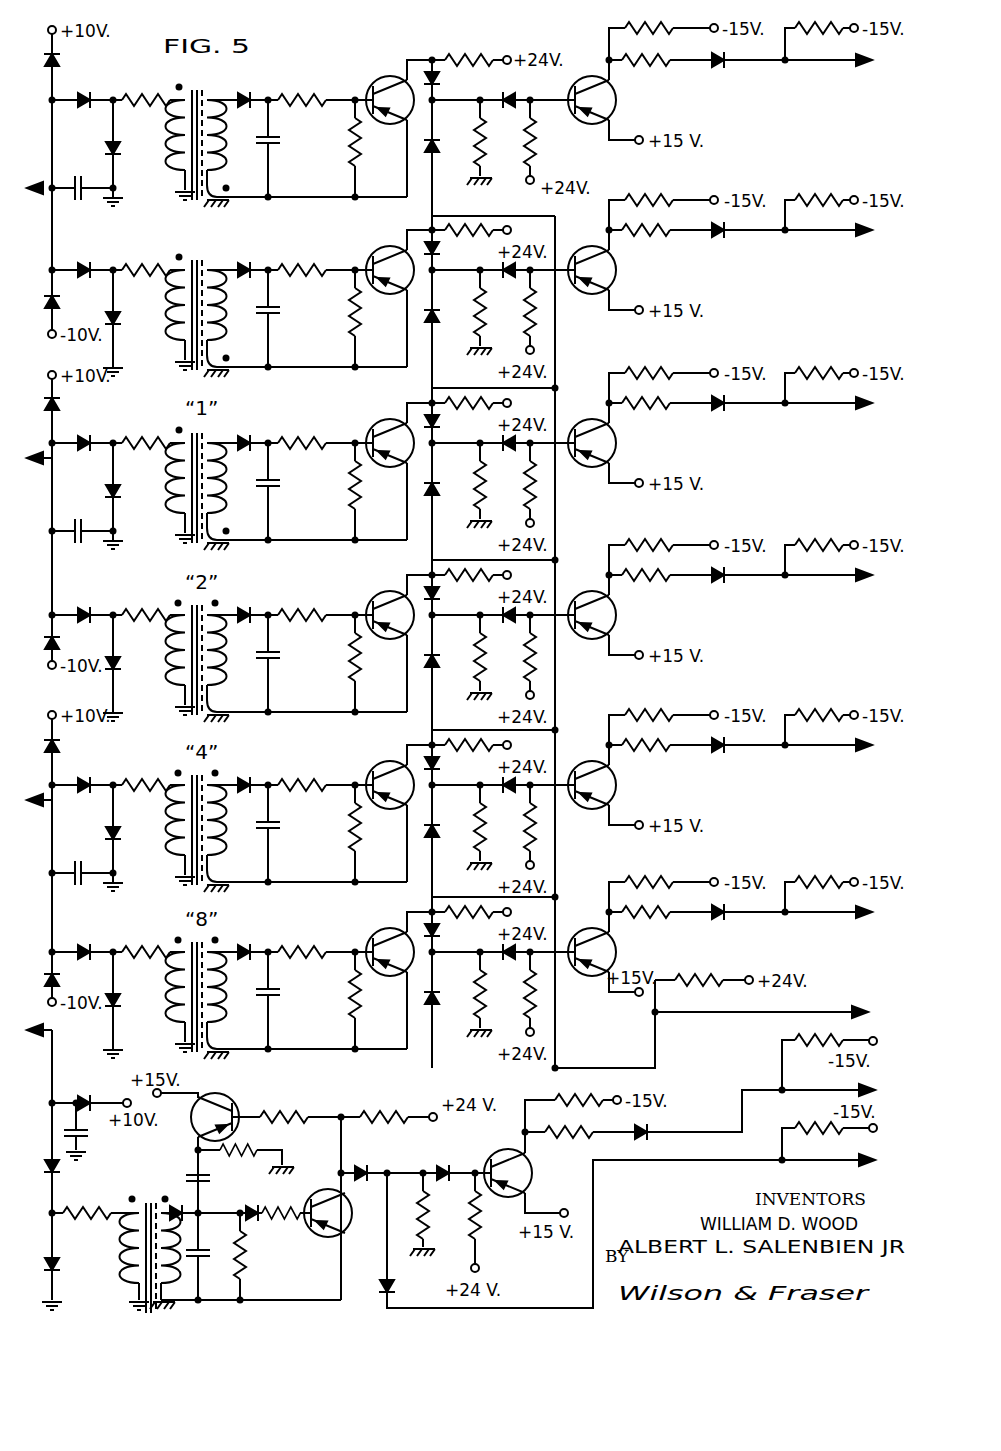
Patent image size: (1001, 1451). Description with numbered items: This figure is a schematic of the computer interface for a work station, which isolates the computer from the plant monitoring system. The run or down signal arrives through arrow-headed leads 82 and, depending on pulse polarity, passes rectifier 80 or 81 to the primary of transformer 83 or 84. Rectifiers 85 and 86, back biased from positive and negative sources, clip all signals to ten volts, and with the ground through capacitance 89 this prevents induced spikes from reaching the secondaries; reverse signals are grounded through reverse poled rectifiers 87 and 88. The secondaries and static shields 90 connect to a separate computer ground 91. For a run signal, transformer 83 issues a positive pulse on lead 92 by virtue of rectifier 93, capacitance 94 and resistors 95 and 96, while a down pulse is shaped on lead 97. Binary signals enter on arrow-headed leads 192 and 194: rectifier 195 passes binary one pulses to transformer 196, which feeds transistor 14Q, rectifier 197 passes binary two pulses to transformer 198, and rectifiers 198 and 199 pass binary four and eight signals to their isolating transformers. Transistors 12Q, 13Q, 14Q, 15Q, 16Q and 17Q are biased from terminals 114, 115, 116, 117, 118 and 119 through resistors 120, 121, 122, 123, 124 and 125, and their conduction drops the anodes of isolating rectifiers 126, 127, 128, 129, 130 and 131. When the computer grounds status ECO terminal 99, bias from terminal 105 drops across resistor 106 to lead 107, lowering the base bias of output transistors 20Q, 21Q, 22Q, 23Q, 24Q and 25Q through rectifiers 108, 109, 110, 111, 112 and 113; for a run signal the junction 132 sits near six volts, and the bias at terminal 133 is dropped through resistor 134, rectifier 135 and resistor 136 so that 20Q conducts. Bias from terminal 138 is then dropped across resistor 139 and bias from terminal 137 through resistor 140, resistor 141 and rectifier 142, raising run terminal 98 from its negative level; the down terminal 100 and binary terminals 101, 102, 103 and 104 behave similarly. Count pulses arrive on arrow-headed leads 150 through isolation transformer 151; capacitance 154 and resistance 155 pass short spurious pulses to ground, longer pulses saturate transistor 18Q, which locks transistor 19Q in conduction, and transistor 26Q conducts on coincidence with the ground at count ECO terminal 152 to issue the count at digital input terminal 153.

The rectifier 80 is at (99, 74).
The rectifier 81 is at (100, 249).
The arrow-headed leads 82 is at (32, 172).
The transformer 83 is at (147, 120).
The transformer 84 is at (178, 315).
The rectifier 85 is at (67, 52).
The rectifier 86 is at (68, 299).
The reverse poled rectifier 87 is at (96, 138).
The reverse poled rectifier 88 is at (126, 303).
The capacitance 89 is at (77, 175).
The static shield 90 is at (196, 125).
The ground 91 is at (233, 213).
The lead 92 is at (302, 83).
The rectifier 93 is at (235, 84).
The capacitance 94 is at (289, 141).
The resistor 95 is at (240, 73).
The resistor 96 is at (374, 142).
The lead 97 is at (302, 254).
The run terminal 98 is at (798, 74).
The status ECO terminal 99 is at (850, 1001).
The down terminal 100 is at (853, 247).
The binary 1 terminal 101 is at (850, 420).
The binary 2 terminal 102 is at (850, 592).
The binary 4 terminal 103 is at (850, 762).
The binary 8 terminal 104 is at (850, 934).
The terminal 105 is at (705, 999).
The resistor 106 is at (699, 969).
The lead 107 is at (655, 1050).
The rectifier 108 is at (451, 134).
The rectifier 109 is at (453, 315).
The rectifier 110 is at (452, 489).
The rectifier 111 is at (452, 669).
The rectifier 112 is at (453, 837).
The rectifier 113 is at (453, 1008).
The terminal 114 is at (512, 70).
The terminal 115 is at (471, 242).
The terminal 116 is at (471, 415).
The terminal 117 is at (471, 587).
The terminal 118 is at (471, 758).
The terminal 119 is at (471, 925).
The resistor 120 is at (467, 44).
The resistor 121 is at (470, 215).
The resistor 122 is at (469, 388).
The resistor 123 is at (472, 560).
The resistor 124 is at (472, 730).
The resistor 125 is at (472, 897).
The isolating rectifier 126 is at (404, 58).
The isolating rectifier 127 is at (453, 268).
The isolating rectifier 128 is at (452, 441).
The isolating rectifier 129 is at (452, 613).
The isolating rectifier 130 is at (453, 784).
The isolating rectifier 131 is at (453, 959).
The junction 132 is at (457, 81).
The terminal 133 is at (555, 164).
The resistor 134 is at (549, 142).
The rectifier 135 is at (506, 121).
The resistor 136 is at (464, 153).
The terminal 137 is at (879, 55).
The terminal 138 is at (744, 41).
The resistor 139 is at (667, 39).
The resistor 140 is at (819, 40).
The resistor 141 is at (651, 73).
The rectifier 142 is at (744, 72).
The arrow-headed leads 150 is at (58, 1040).
The isolation transformer 151 is at (128, 1254).
The count ECO terminal 152 is at (846, 1158).
The count digital input terminal 153 is at (846, 1088).
The capacitance 154 is at (226, 1168).
The resistance 155 is at (244, 1144).
The arrow-headed lead 192 is at (37, 476).
The arrow-headed lead 194 is at (37, 809).
The rectifier 195 is at (95, 426).
The transformer 196 is at (180, 488).
The rectifier 197 is at (98, 598).
The transformer 198 is at (180, 660).
The rectifier 199 is at (95, 935).
The N-P-N transistor 12Q is at (372, 92).
The transistor 13Q is at (376, 260).
The transistor 14Q is at (376, 433).
The transistor 15Q is at (376, 605).
The transistor 16Q is at (376, 775).
The transistor 17Q is at (376, 942).
The transistor 18Q is at (226, 1109).
The transistor 19Q is at (320, 1196).
The output transistor 20Q is at (570, 92).
The output transistor 21Q is at (588, 260).
The output transistor 22Q is at (588, 433).
The output transistor 23Q is at (588, 605).
The output transistor 24Q is at (588, 775).
The output transistor 25Q is at (588, 942).
The transistor 26Q is at (510, 1150).